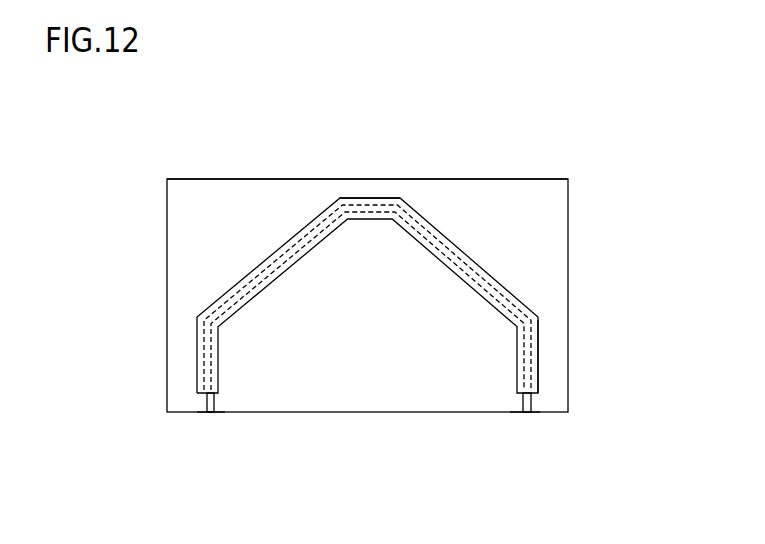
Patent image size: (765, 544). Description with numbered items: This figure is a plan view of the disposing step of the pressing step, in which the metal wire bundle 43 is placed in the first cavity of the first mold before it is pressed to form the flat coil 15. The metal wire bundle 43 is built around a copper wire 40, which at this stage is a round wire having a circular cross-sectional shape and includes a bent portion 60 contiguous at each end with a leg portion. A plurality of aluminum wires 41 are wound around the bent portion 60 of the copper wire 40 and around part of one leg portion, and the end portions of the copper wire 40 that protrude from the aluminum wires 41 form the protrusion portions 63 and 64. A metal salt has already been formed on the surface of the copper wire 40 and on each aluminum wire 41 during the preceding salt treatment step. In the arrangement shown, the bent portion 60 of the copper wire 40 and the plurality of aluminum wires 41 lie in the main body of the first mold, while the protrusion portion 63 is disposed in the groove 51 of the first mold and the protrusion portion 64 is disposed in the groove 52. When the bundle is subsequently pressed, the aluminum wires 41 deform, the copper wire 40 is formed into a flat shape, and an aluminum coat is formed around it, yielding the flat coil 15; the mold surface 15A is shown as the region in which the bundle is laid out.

The flat coil 15 is at (217, 207).
The mounting surface of substrate 15A is at (307, 207).
The copper wire 40 is at (408, 256).
The metal wire bundle 43 is at (358, 198).
The aluminum wires 41 is at (538, 351).
The bent portion 60 is at (433, 233).
The protrusion portion 63 is at (207, 398).
The protrusion portion 64 is at (531, 397).
The groove 51 is at (204, 406).
The groove 52 is at (533, 406).